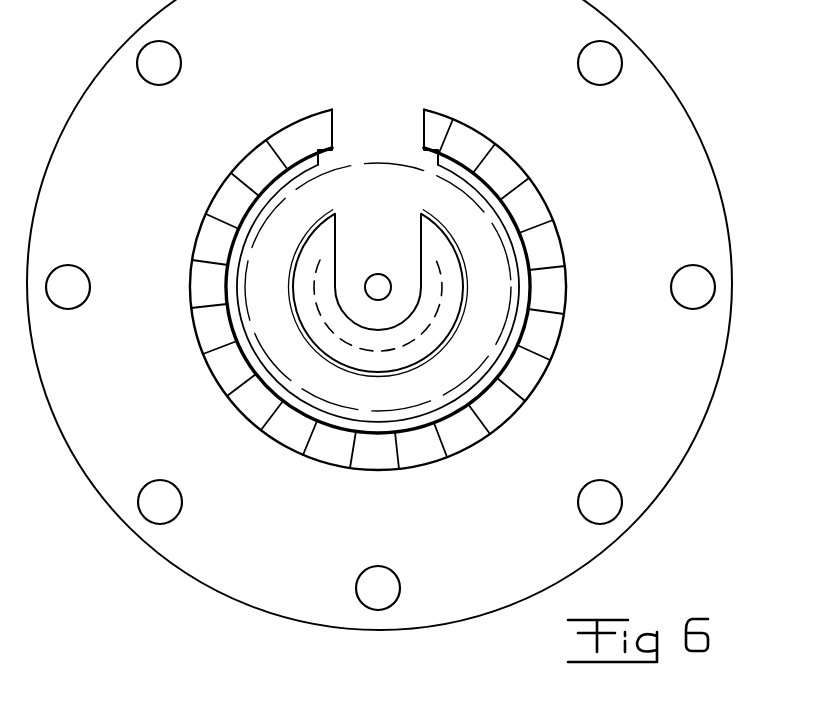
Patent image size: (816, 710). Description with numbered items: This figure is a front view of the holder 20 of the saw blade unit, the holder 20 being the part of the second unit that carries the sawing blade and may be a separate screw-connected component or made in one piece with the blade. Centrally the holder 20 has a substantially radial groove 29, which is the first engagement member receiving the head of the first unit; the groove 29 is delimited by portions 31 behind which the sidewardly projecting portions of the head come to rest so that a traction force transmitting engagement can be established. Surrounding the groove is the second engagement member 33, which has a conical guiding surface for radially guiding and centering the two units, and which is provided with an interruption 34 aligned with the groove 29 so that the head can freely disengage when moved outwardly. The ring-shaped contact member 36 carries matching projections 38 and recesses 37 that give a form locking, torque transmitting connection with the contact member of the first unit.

The holder 20 is at (684, 76).
The groove 29 is at (398, 244).
The groove delimiting portions 31 is at (333, 317).
The second engagement member 33 is at (503, 161).
The interruption 34 is at (442, 45).
The contact member 36 is at (257, 428).
The recesses 37 is at (208, 331).
The projections 38 is at (233, 376).